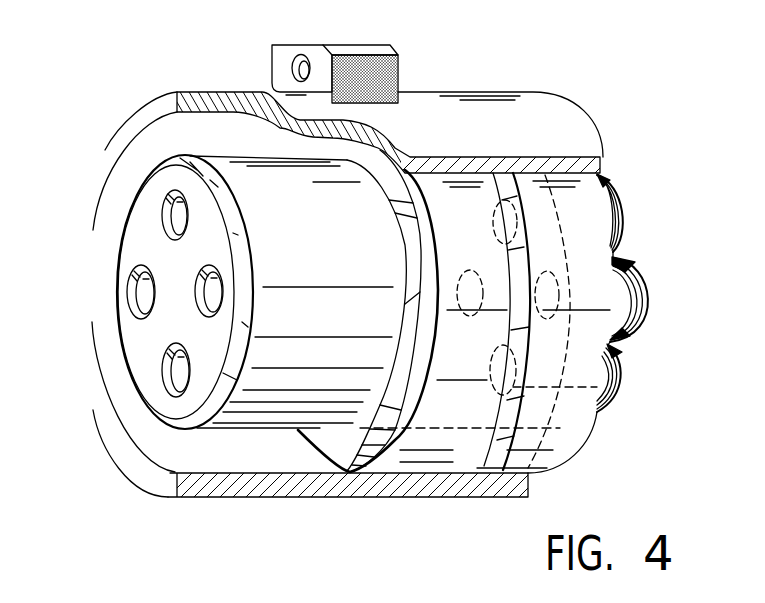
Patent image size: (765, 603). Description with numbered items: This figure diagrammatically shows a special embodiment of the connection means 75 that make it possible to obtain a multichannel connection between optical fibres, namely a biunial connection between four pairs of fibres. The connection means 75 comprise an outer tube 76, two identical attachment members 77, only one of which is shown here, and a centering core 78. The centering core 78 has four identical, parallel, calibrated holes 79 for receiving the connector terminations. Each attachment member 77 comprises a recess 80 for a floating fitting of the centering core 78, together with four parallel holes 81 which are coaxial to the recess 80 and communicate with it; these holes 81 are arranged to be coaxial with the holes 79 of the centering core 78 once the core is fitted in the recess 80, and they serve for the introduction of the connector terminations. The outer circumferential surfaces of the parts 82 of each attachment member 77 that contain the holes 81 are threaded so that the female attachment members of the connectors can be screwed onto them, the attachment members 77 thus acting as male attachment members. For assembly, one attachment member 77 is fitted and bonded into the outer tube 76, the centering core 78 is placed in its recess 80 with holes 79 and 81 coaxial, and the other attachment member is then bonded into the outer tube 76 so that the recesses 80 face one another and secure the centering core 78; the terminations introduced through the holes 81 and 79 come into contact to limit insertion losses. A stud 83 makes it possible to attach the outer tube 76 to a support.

The connection means 75 is at (457, 91).
The outer tube 76 is at (525, 112).
The attachment member 77 is at (583, 203).
The centering core 78 is at (263, 410).
The calibrated holes 79 is at (190, 222).
The recess 80 is at (543, 413).
The parallel holes 81 is at (550, 316).
The threaded parts 82 is at (643, 272).
The stud 83 is at (280, 53).